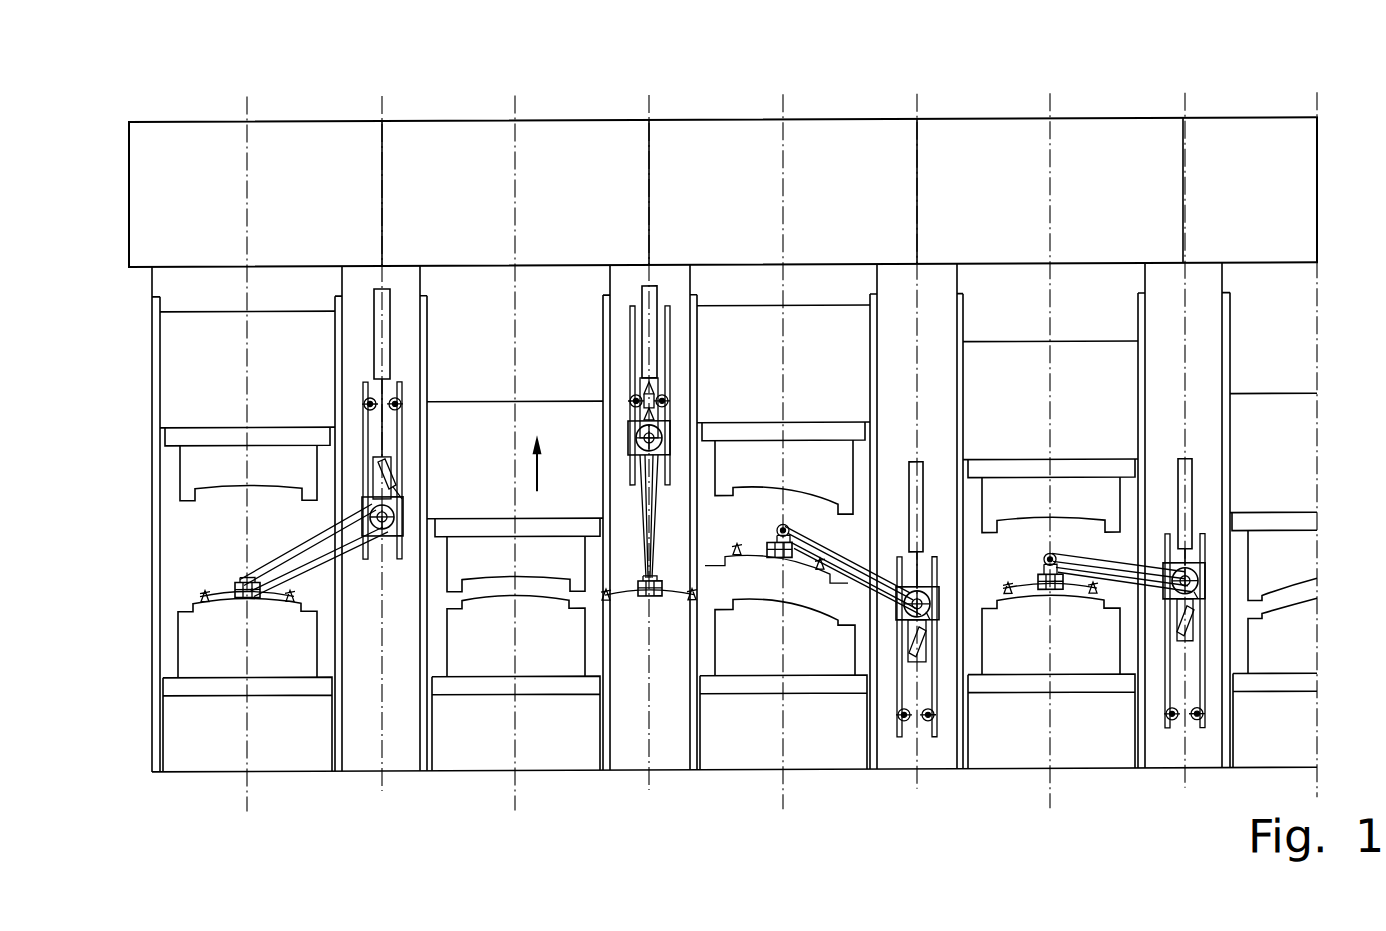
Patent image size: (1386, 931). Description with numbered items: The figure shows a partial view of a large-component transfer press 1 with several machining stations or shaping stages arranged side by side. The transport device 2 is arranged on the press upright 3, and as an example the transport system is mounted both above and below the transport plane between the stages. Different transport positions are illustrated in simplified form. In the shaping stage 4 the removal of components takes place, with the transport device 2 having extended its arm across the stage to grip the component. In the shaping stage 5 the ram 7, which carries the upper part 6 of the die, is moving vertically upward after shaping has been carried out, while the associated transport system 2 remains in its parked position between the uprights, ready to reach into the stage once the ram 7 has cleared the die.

The large-component transfer press 1 is at (188, 97).
The transport device 2 is at (387, 574).
The press upright 3 is at (367, 443).
The shaping stage 4 is at (247, 558).
The shaping stage 5 is at (515, 556).
The upper part of the die 6 is at (566, 597).
The ram 7 is at (515, 460).